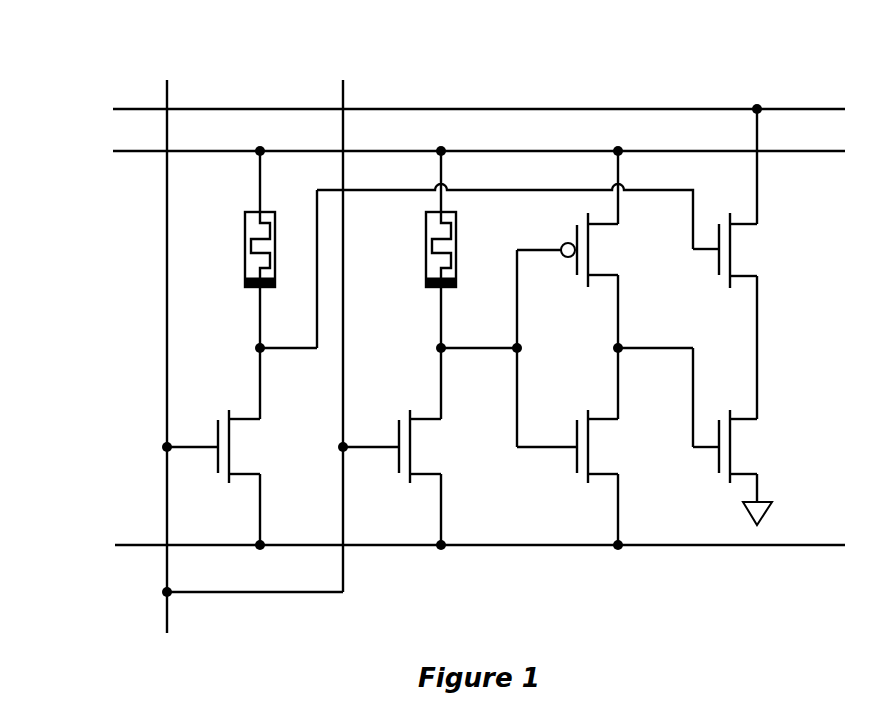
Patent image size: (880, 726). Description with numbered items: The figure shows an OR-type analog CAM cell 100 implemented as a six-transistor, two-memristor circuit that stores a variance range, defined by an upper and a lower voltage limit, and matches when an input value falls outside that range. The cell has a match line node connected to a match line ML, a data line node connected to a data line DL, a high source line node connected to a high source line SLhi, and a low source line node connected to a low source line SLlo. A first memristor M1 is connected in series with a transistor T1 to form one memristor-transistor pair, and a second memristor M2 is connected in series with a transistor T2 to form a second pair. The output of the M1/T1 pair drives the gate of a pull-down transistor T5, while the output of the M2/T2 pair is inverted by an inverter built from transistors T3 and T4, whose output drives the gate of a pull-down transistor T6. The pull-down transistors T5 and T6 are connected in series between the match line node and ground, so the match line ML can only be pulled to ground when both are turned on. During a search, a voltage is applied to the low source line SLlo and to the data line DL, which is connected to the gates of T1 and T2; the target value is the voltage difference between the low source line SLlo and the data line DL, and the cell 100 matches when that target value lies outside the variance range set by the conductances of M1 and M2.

The analog CAM cell 100 is at (103, 42).
The first memristor M1 is at (235, 285).
The second memristor M2 is at (417, 285).
The transistor T1 is at (227, 477).
The transistor T2 is at (405, 477).
The transistor T3 is at (580, 477).
The transistor T4 is at (580, 285).
The pull-down transistor T5 is at (747, 264).
The pull-down transistor T6 is at (747, 467).
The match line ML is at (457, 110).
The data line DL is at (251, 375).
The high source line SLhi is at (456, 152).
The low source line SLlo is at (456, 546).